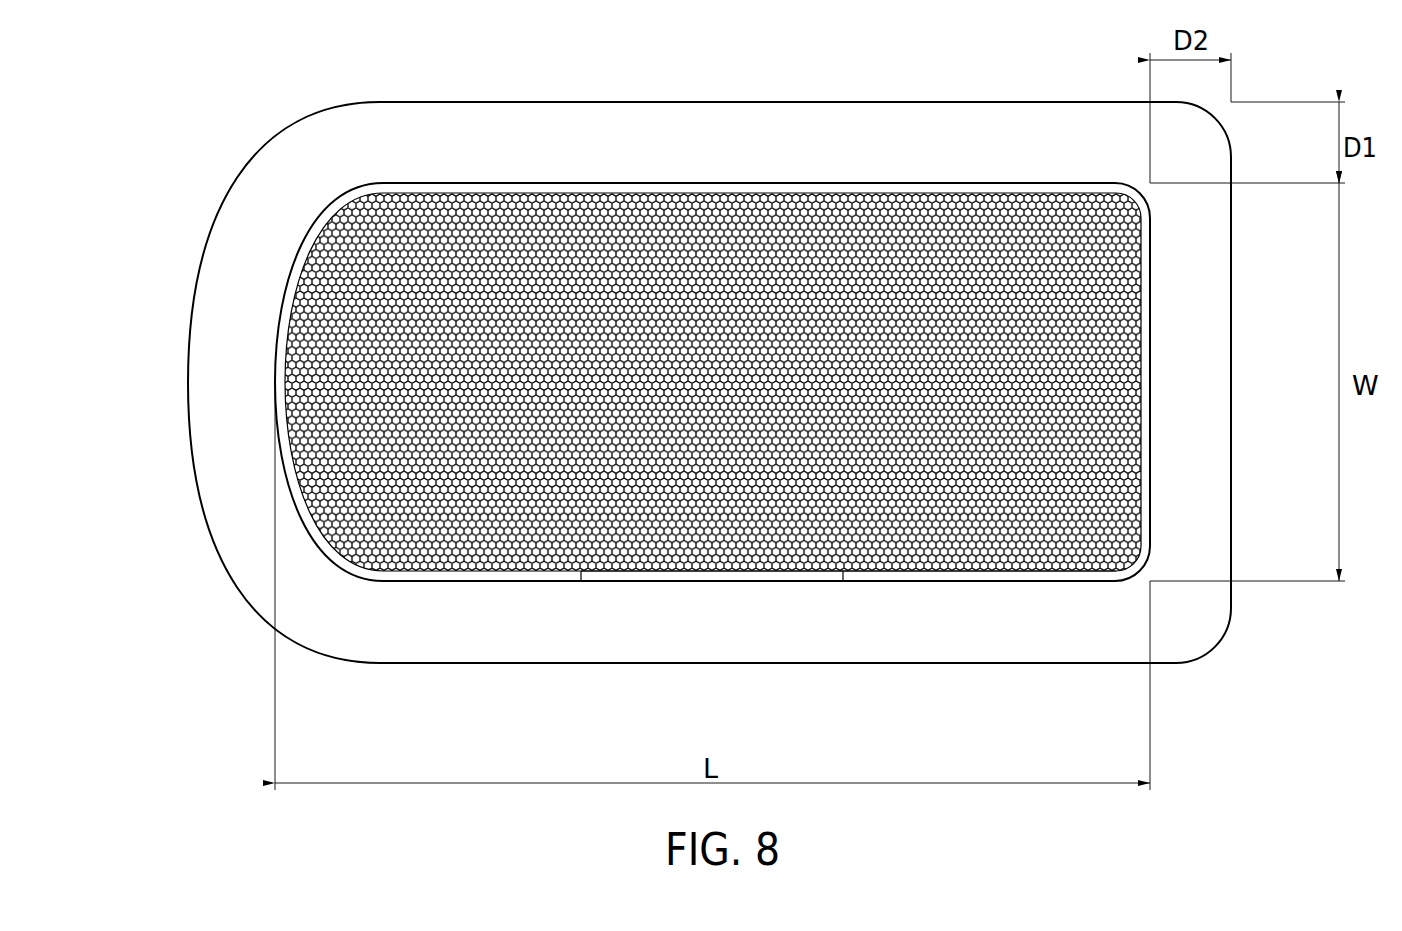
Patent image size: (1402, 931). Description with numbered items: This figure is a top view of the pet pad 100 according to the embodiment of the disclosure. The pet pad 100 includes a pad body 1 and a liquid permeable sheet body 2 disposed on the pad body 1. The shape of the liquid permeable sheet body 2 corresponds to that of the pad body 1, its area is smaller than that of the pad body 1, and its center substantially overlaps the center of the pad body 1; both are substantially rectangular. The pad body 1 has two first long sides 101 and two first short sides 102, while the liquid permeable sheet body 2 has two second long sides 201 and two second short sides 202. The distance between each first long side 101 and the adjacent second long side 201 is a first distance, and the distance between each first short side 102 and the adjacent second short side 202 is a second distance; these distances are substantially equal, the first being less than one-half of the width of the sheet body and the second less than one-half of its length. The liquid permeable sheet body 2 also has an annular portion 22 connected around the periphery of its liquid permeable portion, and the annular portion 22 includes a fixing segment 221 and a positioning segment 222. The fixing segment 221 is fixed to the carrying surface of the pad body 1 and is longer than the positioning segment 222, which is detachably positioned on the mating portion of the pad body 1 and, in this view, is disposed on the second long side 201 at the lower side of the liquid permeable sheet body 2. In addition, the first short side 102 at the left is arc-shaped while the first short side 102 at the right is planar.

The pet pad 100 is at (213, 77).
The pad body 1 is at (700, 384).
The first long side 101 is at (733, 102).
The first short side 102 is at (188, 368).
The liquid permeable sheet body 2 is at (697, 395).
The second long side 201 is at (641, 183).
The second short side 202 is at (275, 323).
The annular portion 22 is at (848, 664).
The fixing segment 221 is at (895, 576).
The positioning segment 222 is at (797, 576).